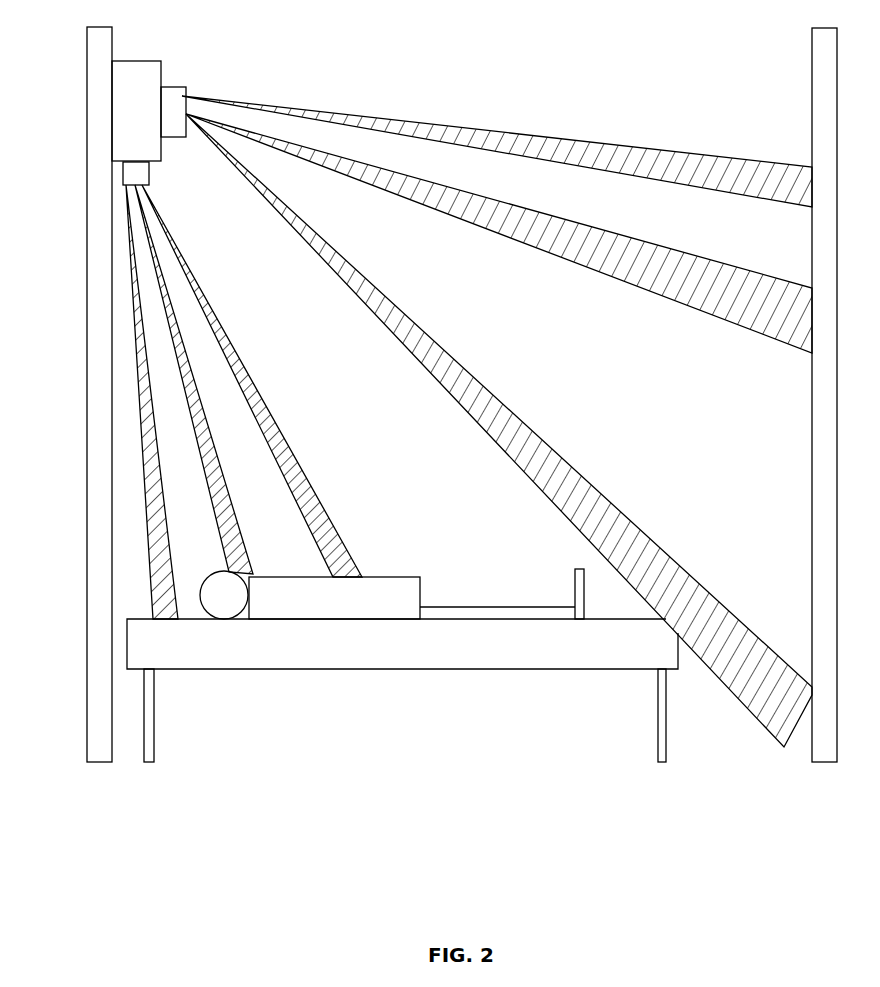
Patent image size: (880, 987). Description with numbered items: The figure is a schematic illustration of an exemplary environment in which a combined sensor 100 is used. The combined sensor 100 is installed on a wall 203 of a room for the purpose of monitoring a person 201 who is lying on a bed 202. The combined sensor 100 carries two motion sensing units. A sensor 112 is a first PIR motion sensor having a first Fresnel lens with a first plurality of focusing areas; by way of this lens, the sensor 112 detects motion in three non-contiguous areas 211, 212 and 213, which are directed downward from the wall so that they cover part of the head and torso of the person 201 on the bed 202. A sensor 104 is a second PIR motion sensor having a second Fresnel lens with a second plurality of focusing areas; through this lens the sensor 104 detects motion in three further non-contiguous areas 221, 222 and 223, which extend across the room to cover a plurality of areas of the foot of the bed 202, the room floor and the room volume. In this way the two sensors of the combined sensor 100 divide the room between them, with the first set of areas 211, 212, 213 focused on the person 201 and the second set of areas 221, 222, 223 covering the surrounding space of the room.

The combined sensor 100 is at (137, 60).
The second PIR motion sensor 104 is at (173, 85).
The first PIR motion sensor 112 is at (150, 173).
The person 201 is at (412, 577).
The bed 202 is at (597, 669).
The wall 203 is at (93, 58).
The non-contiguous area 211 is at (313, 478).
The non-contiguous area 212 is at (230, 517).
The non-contiguous area 213 is at (168, 537).
The non-contiguous area 221 is at (675, 150).
The non-contiguous area 222 is at (713, 268).
The non-contiguous area 223 is at (603, 495).